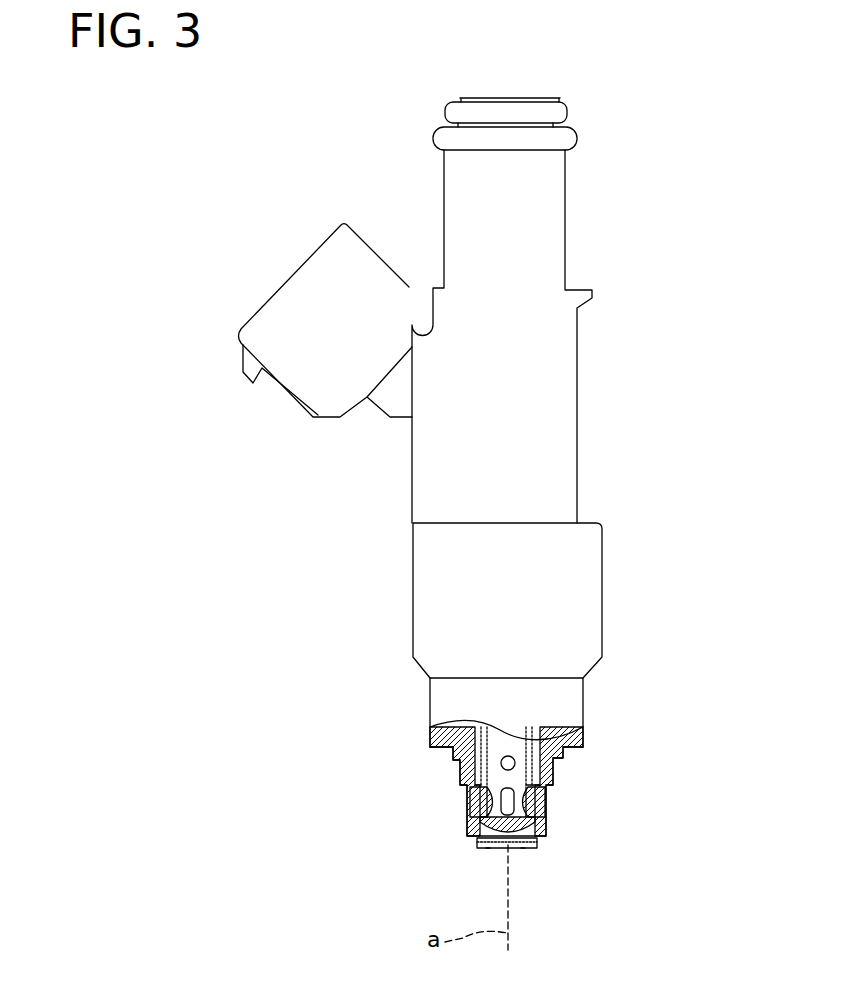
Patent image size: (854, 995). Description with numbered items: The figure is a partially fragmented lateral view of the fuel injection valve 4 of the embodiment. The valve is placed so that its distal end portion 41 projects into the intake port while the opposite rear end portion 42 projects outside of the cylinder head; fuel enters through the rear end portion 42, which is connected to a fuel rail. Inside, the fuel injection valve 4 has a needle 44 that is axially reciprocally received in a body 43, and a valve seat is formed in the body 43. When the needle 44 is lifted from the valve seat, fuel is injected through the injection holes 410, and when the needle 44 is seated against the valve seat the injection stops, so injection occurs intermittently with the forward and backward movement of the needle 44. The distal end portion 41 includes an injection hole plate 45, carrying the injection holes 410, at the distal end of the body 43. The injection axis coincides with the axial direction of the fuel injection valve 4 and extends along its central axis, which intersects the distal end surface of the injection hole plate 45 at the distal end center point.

The fuel injection valve 4 is at (600, 360).
The rear end portion 42 is at (582, 112).
The distal end portion 41 is at (458, 827).
The needle 44 is at (510, 782).
The body 43 is at (552, 802).
The injection hole plate 45 is at (533, 847).
The injection holes 410 is at (488, 848).